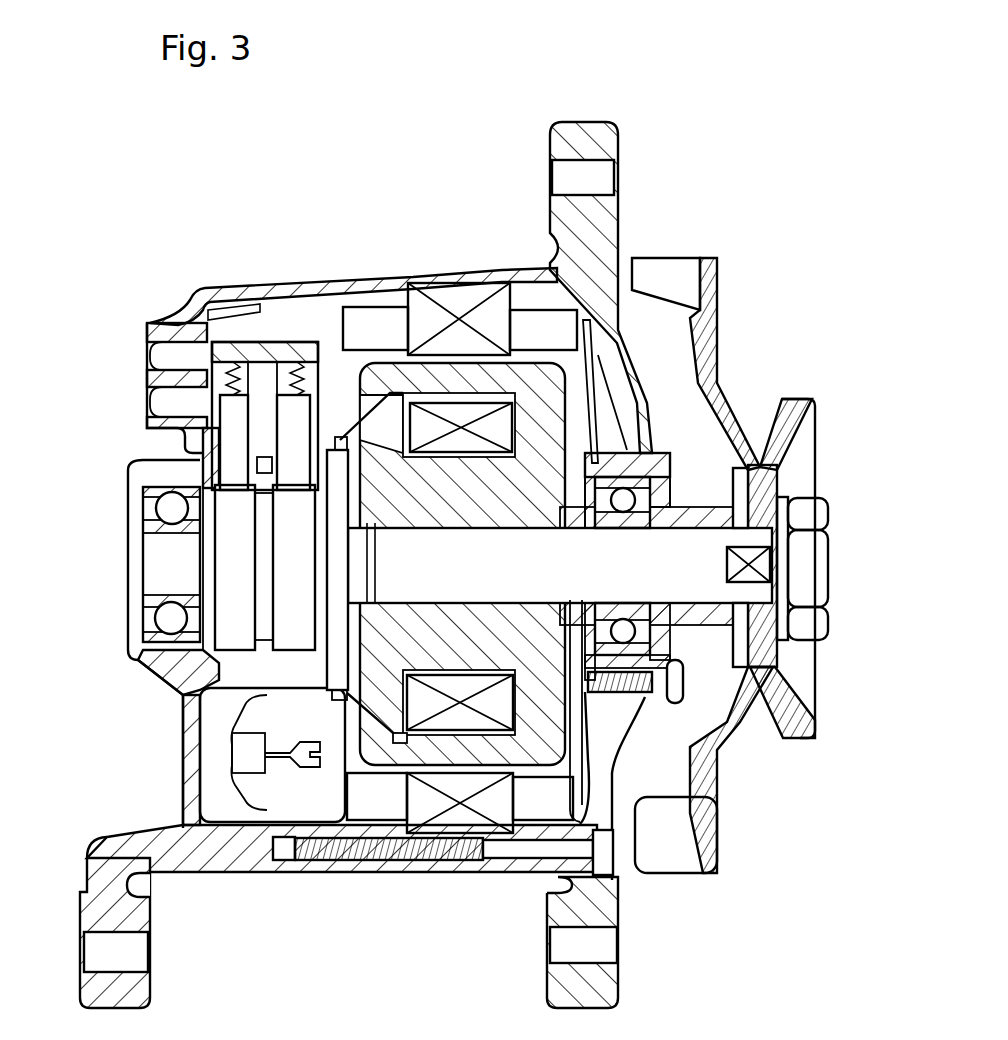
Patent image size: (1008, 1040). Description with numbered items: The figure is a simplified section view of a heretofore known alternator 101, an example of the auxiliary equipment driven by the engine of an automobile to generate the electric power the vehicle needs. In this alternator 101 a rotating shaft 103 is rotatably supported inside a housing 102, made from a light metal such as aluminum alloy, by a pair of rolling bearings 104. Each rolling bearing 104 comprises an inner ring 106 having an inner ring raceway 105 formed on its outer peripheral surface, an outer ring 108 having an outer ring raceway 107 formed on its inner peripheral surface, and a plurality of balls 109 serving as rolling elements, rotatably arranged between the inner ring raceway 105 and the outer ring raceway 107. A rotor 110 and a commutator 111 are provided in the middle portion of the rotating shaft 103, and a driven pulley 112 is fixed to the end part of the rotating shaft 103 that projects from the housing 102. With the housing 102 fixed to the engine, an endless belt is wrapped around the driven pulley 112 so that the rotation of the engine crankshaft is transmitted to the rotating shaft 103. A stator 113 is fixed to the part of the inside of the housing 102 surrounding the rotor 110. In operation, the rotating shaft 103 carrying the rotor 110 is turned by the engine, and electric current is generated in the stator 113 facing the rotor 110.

The alternator 101 is at (660, 175).
The housing 102 is at (355, 872).
The rotating shaft 103 is at (683, 560).
The rolling bearing 104 is at (660, 398).
The inner ring raceway 105 is at (640, 698).
The inner ring 106 is at (733, 732).
The outer ring raceway 107 is at (172, 488).
The outer ring 108 is at (667, 480).
The balls 109 is at (175, 507).
The rotor 110 is at (290, 862).
The commutator 111 is at (227, 566).
The driven pulley 112 is at (778, 440).
The stator 113 is at (460, 285).